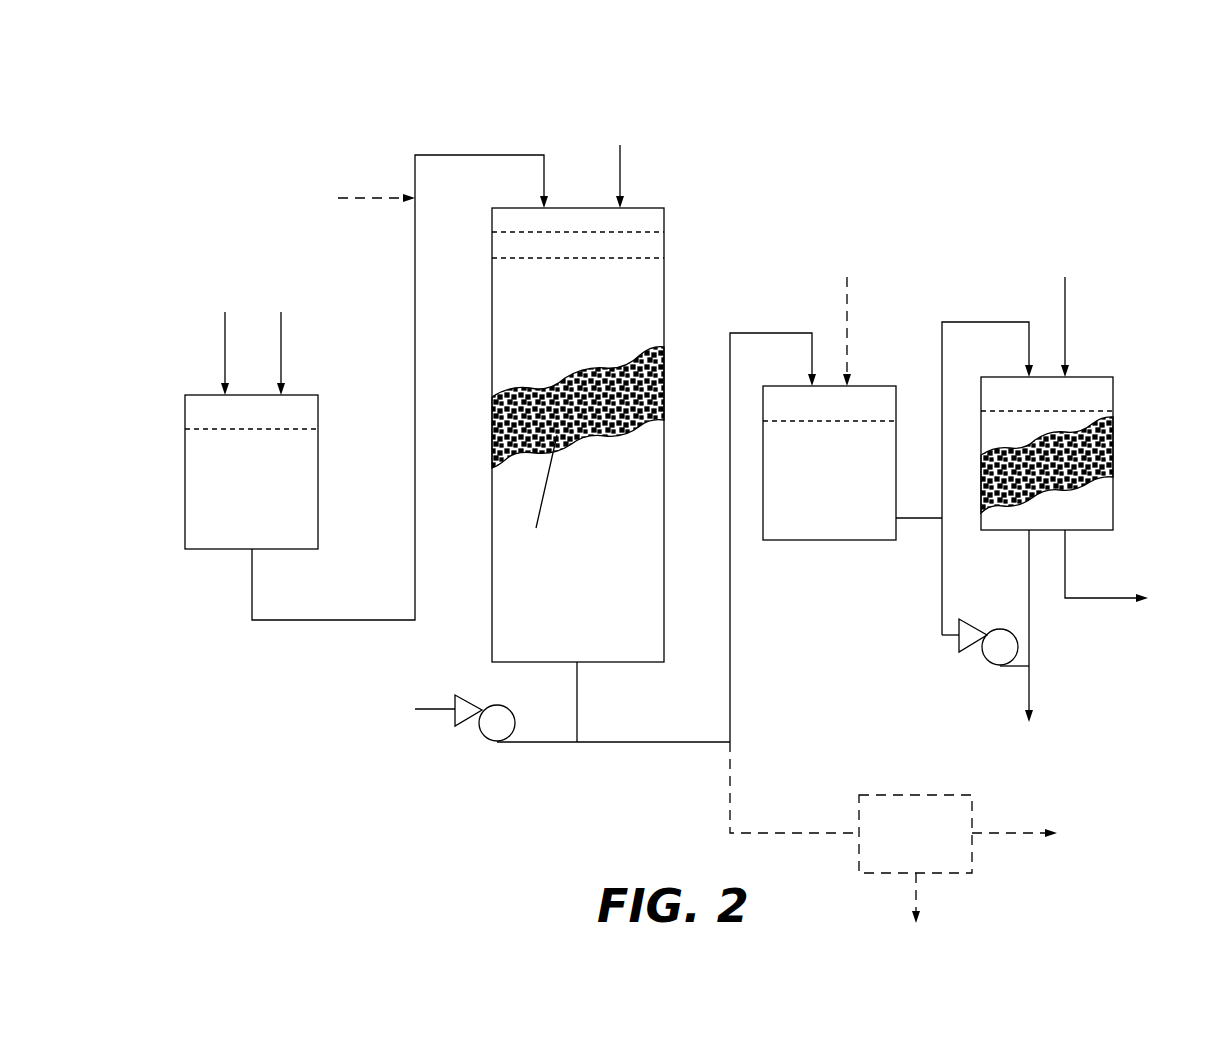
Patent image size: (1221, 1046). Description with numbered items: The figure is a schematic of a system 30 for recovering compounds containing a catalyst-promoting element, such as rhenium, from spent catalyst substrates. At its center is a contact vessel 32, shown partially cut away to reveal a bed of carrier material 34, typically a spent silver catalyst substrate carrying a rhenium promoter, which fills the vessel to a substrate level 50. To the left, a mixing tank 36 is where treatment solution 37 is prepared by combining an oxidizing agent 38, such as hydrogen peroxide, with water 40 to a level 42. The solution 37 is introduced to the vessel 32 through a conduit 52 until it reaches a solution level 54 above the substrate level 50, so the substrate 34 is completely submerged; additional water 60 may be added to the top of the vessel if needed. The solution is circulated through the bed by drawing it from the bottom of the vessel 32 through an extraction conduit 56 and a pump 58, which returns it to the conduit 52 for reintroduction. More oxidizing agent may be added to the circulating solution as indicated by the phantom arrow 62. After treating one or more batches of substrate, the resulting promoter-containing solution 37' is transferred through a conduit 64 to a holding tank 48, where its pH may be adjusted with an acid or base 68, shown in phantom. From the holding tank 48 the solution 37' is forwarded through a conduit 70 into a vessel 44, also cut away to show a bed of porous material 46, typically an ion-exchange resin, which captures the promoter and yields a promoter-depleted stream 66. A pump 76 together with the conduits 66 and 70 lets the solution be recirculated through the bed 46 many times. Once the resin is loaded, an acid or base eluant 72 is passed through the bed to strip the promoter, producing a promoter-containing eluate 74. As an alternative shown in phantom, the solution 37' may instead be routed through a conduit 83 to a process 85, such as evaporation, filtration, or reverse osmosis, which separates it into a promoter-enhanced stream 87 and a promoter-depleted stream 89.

The system 30 is at (1082, 157).
The contact vessel 32 is at (664, 286).
The carrier material 34 is at (611, 428).
The mixing tank 36 is at (185, 507).
The treatment solution 37 is at (252, 513).
The promoter-containing solution 37' is at (830, 480).
The oxidizing agent 38 is at (281, 352).
The water 40 is at (225, 352).
The level 42 is at (220, 430).
The vessel 44 is at (1103, 395).
The bed of porous material 46 is at (1103, 450).
The holding tank 48 is at (832, 541).
The substrate level 50 is at (542, 260).
The conduit 52 is at (478, 155).
The solution level 54 is at (614, 234).
The extraction conduit 56 is at (578, 706).
The pump 58 is at (494, 735).
The water 60 is at (622, 170).
The arrow 62 is at (372, 195).
The conduit 64 is at (731, 708).
The promoter-depleted stream 66 is at (1031, 607).
The acid or base 68 is at (849, 306).
The conduit 70 is at (988, 322).
The eluant 72 is at (1067, 306).
The eluate 74 is at (1100, 600).
The pump 76 is at (998, 660).
The conduit 83 is at (730, 802).
The process 85 is at (866, 815).
The promoter-enhanced stream 87 is at (1010, 830).
The promoter-depleted stream 89 is at (918, 892).